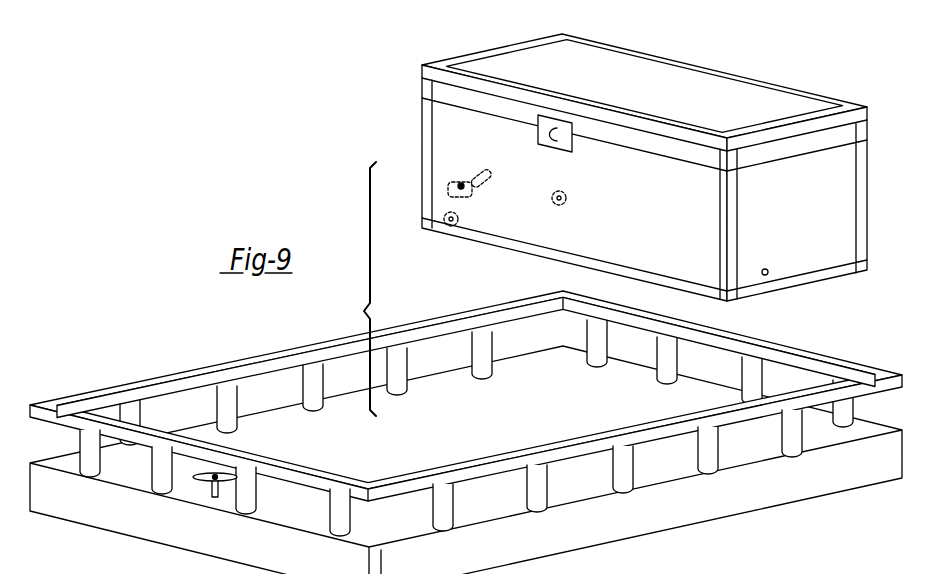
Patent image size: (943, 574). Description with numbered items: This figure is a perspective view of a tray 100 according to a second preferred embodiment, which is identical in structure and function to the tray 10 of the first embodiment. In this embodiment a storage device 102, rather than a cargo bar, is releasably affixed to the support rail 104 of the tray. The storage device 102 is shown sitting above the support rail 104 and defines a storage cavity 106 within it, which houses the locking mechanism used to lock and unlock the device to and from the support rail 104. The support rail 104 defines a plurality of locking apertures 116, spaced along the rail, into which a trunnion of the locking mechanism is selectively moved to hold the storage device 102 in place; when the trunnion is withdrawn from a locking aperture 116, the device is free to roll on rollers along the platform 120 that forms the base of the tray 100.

The tray 100 is at (466, 294).
The storage device 102 is at (644, 167).
The support rail 104 is at (77, 399).
The storage cavity 106 is at (797, 216).
The locking apertures 116 is at (466, 400).
The platform 120 is at (740, 440).
The tray 10 is at (462, 146).